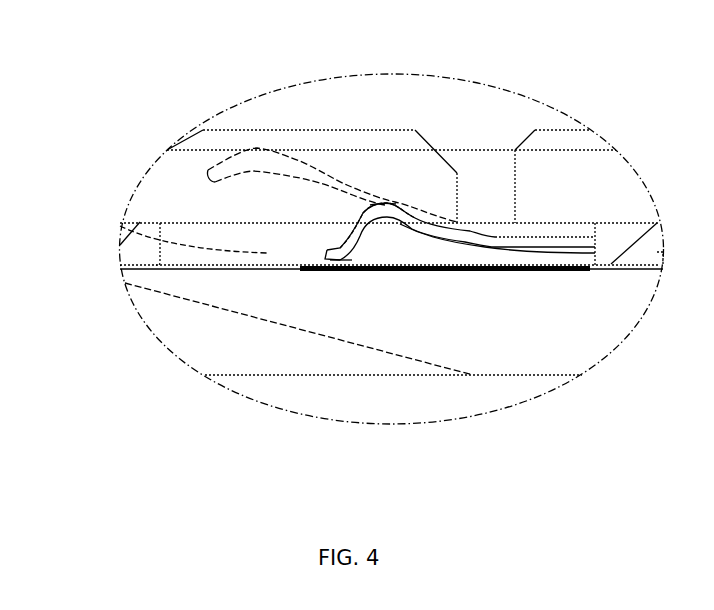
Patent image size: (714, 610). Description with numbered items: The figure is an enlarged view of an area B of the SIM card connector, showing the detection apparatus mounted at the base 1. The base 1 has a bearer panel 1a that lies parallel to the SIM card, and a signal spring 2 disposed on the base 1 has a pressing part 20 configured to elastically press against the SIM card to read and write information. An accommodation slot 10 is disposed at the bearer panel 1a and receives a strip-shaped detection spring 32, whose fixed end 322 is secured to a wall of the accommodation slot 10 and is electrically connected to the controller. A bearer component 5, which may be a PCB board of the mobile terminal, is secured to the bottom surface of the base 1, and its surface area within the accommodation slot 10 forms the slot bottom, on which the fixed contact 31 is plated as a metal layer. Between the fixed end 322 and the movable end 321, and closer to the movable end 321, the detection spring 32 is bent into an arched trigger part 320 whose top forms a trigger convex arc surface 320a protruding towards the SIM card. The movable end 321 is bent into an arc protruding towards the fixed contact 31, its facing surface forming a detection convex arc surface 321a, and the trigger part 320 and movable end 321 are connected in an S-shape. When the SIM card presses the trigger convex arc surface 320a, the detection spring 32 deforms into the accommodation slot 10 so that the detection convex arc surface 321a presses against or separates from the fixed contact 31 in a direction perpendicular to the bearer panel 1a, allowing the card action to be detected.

The base 1 is at (128, 257).
The bearer panel 1a is at (180, 223).
The signal spring 2 is at (349, 184).
The bearer component 5 is at (200, 334).
The accommodation slot 10 is at (120, 224).
The pressing part 20 is at (258, 150).
The fixed contact 31 is at (313, 270).
The detection spring 32 is at (484, 241).
The trigger part 320 is at (389, 210).
The trigger convex arc surface 320a is at (387, 203).
The movable end 321 is at (335, 257).
The detection convex arc surface 321a is at (351, 263).
The fixed end 322 is at (588, 243).
The area B is at (567, 112).